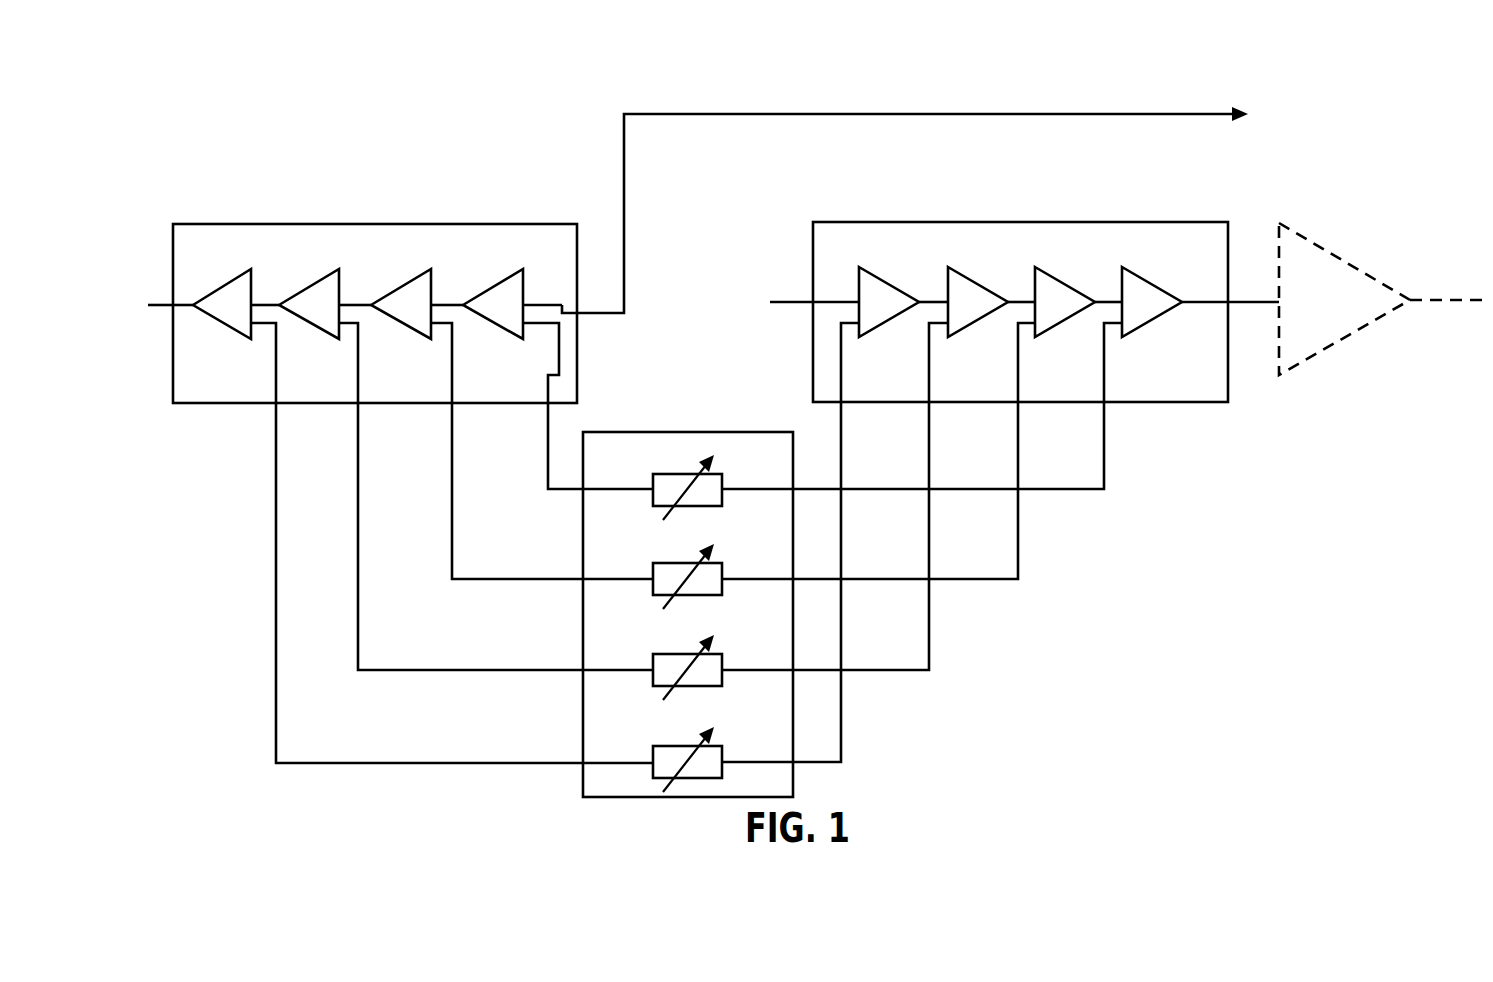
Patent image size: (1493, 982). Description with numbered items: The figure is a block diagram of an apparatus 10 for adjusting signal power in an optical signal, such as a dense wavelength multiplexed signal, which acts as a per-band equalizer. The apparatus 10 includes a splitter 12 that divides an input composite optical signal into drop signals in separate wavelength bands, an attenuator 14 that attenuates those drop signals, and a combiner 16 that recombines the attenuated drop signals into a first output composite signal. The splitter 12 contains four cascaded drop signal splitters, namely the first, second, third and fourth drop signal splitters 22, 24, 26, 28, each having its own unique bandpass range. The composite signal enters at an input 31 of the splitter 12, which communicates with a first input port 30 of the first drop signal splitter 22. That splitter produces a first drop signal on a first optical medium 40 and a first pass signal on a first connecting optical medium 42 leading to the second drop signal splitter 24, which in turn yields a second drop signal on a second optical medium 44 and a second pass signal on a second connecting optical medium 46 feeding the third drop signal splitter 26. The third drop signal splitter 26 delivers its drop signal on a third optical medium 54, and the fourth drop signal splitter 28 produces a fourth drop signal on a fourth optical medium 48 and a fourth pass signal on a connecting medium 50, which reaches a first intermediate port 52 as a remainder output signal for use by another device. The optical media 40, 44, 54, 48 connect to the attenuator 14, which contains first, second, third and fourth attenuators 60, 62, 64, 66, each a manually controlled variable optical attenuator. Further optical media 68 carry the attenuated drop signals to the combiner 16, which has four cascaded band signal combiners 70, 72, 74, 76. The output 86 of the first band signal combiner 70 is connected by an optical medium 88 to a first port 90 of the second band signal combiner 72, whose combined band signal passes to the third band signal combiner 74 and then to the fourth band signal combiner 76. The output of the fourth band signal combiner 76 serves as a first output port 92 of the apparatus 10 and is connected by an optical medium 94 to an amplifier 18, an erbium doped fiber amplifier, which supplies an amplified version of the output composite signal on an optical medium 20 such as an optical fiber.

The apparatus for adjusting signal power in an optical signal 10 is at (1000, 62).
The splitter 12 is at (342, 237).
The attenuator 14 is at (695, 430).
The combiner 16 is at (966, 228).
The amplifier 18 is at (1331, 262).
The optical medium 20 is at (1427, 297).
The first drop signal splitter 22 is at (222, 283).
The second drop signal splitter 24 is at (312, 290).
The third drop signal splitter 26 is at (408, 290).
The fourth drop signal splitter 28 is at (500, 290).
The first input port 30 is at (184, 300).
The input 31 is at (150, 304).
The first optical medium 40 is at (276, 588).
The first connecting optical medium 42 is at (265, 301).
The second optical medium 44 is at (358, 535).
The second connecting optical medium 46 is at (357, 301).
The fourth optical medium 48 is at (548, 430).
The connecting medium 50 is at (544, 303).
The first intermediate port 52 is at (583, 316).
The third optical medium 54 is at (452, 482).
The first attenuator 60 is at (724, 742).
The second attenuator 62 is at (724, 650).
The third attenuator 64 is at (724, 560).
The fourth attenuator 66 is at (724, 468).
The optical media 68 is at (827, 452).
The first band signal combiner 70 is at (882, 265).
The second band signal combiner 72 is at (973, 277).
The third band signal combiner 74 is at (1054, 275).
The fourth band signal combiner 76 is at (1155, 277).
The output 86 is at (918, 299).
The optical medium 88 is at (934, 299).
The first port 90 is at (940, 306).
The first output port 92 is at (1228, 300).
The optical medium 94 is at (1256, 304).